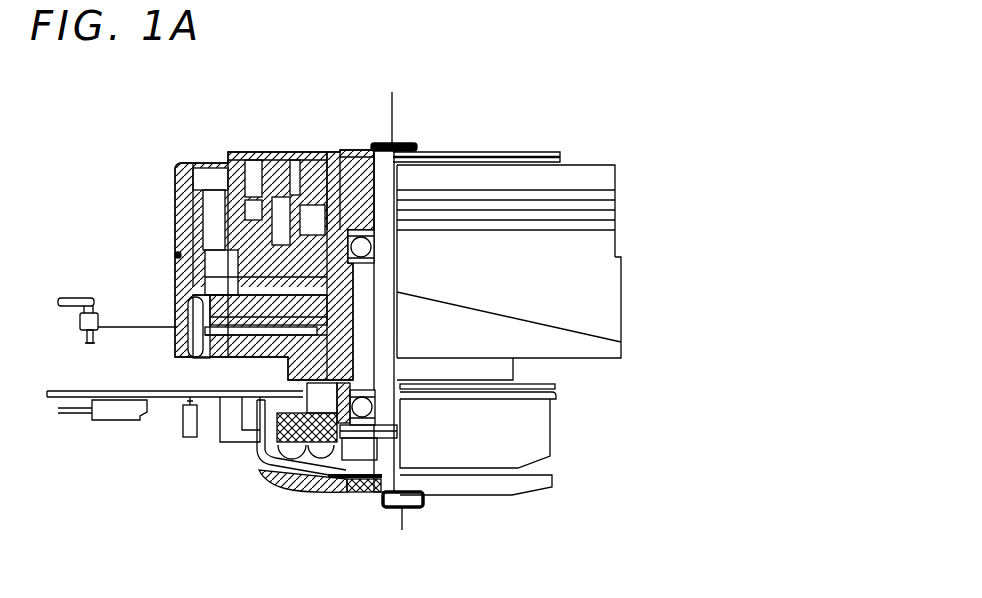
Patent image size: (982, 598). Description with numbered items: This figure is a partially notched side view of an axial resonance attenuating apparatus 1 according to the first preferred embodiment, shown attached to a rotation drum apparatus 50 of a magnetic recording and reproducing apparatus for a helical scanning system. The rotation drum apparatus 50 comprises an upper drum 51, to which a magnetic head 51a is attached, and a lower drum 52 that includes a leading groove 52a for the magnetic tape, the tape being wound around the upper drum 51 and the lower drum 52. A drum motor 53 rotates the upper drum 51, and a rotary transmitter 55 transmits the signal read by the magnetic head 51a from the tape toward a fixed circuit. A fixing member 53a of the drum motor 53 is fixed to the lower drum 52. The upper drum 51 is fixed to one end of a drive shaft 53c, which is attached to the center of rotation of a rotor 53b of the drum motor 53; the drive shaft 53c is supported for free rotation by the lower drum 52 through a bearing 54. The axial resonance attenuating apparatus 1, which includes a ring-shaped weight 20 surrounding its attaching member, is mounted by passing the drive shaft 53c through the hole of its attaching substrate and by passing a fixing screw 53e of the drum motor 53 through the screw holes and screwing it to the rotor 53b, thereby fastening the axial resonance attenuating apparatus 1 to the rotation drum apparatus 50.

The axial resonance attenuating apparatus 1 is at (505, 497).
The weight 20 is at (530, 482).
The rotation drum apparatus 50 is at (535, 151).
The upper drum 51 is at (613, 179).
The magnetic head 51a is at (176, 254).
The lower drum 52 is at (600, 348).
The leading groove 52a is at (606, 307).
The drum motor 53 is at (533, 435).
The fixing member 53a is at (273, 435).
The rotor 53b is at (318, 493).
The drive shaft 53c is at (337, 168).
The fixing screw 53e is at (360, 495).
The bearing 54 is at (373, 229).
The rotary transmitter 55 is at (226, 356).